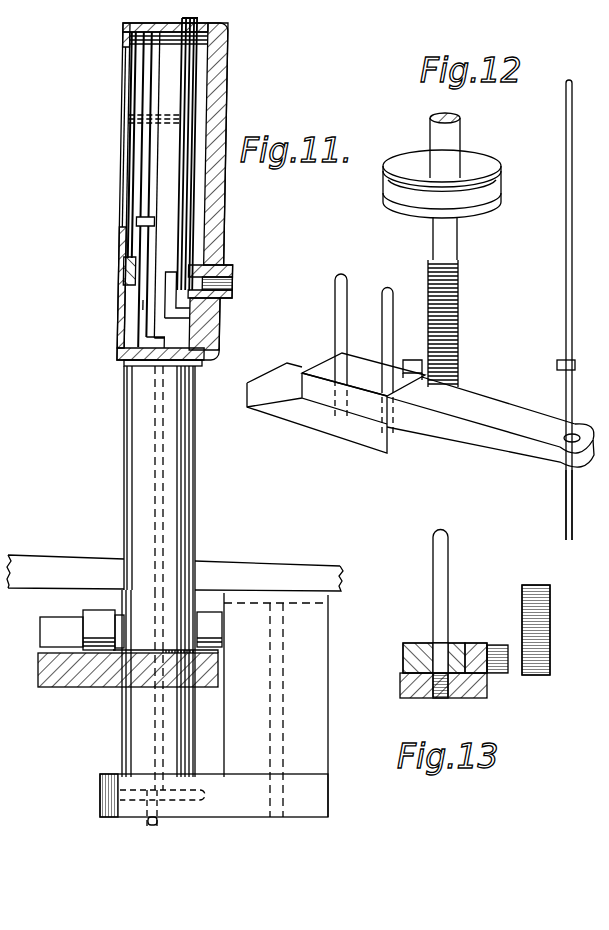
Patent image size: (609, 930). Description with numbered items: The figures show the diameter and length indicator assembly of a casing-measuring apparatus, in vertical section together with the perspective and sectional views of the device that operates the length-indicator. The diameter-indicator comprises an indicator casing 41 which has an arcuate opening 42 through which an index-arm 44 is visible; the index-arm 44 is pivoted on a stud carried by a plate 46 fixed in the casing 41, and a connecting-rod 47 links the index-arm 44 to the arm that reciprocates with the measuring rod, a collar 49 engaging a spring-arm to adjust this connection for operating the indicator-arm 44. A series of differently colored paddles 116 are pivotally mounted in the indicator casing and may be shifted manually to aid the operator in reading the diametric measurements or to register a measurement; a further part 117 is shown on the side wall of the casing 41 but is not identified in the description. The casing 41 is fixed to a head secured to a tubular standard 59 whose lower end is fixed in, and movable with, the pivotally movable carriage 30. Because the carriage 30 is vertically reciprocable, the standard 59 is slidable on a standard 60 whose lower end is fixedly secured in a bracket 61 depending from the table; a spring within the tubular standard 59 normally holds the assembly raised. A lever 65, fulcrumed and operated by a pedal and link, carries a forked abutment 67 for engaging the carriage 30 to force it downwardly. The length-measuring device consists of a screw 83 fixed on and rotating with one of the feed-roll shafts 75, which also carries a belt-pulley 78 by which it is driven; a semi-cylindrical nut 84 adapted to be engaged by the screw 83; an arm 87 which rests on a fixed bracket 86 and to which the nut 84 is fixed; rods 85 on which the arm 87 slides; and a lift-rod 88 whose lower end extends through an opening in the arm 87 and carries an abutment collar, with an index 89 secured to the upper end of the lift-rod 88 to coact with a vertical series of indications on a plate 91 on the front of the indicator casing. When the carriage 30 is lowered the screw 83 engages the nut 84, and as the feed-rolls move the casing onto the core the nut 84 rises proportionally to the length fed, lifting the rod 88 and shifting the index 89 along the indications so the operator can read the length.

In FIG. 11, the carriage 30 is at (80, 688).
In FIG. 11, the indicator casing 41 is at (220, 58).
In FIG. 11, the arcuate opening 42 is at (124, 82).
In FIG. 11, the index-arm 44 is at (133, 148).
In FIG. 11, the plate 46 is at (125, 345).
In FIG. 11, the connecting-rod 47 is at (0, 262).
In FIG. 11, the collar 49 is at (145, 245).
In FIG. 11, the tubular standard 59 is at (190, 472).
In FIG. 11, the standard 60 is at (130, 740).
In FIG. 11, the bracket 61 is at (218, 788).
In FIG. 11, the lever 65 is at (50, 628).
In FIG. 11, the forked abutment 67 is at (212, 630).
In FIG. 12, the vertical shaft 75 is at (452, 137).
In FIG. 12, the belt-pulley 78 is at (487, 165).
In FIG. 12, the screw 83 is at (458, 308).
In FIG. 13, the screw 83 is at (551, 613).
In FIG. 12, the semi-cylindrical nut 84 is at (407, 362).
In FIG. 13, the semi-cylindrical nut 84 is at (502, 645).
In FIG. 12, the rods 85 is at (384, 295).
In FIG. 13, the rods 85 is at (448, 554).
In FIG. 12, the fixed bracket 86 is at (366, 438).
In FIG. 13, the fixed bracket 86 is at (487, 694).
In FIG. 12, the arm 87 is at (505, 420).
In FIG. 11, the lift-rod 88 is at (152, 306).
In FIG. 12, the lift-rod 88 is at (565, 492).
In FIG. 11, the index 89 is at (140, 220).
In FIG. 12, the index 89 is at (571, 378).
In FIG. 11, the plate 91 is at (153, 160).
In FIG. 11, the paddles 116 is at (213, 27).
In FIG. 11, the boss 117 is at (216, 264).